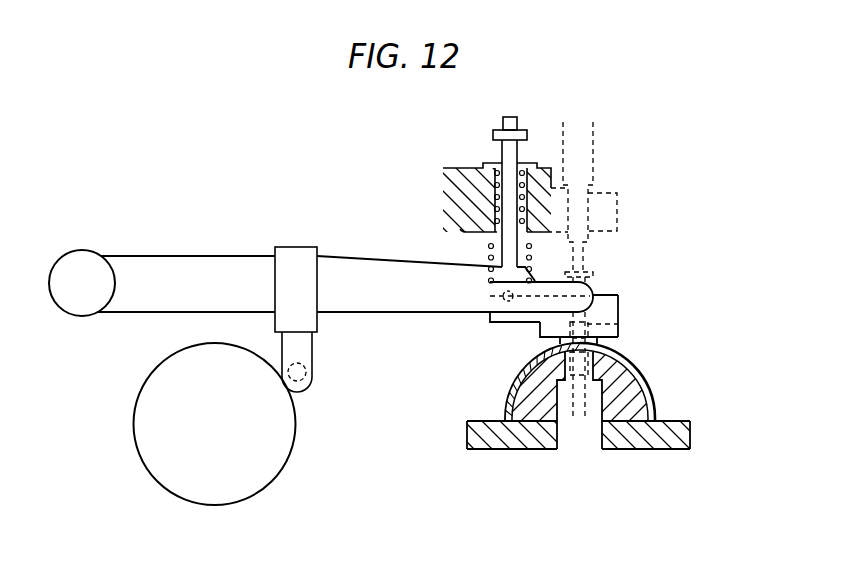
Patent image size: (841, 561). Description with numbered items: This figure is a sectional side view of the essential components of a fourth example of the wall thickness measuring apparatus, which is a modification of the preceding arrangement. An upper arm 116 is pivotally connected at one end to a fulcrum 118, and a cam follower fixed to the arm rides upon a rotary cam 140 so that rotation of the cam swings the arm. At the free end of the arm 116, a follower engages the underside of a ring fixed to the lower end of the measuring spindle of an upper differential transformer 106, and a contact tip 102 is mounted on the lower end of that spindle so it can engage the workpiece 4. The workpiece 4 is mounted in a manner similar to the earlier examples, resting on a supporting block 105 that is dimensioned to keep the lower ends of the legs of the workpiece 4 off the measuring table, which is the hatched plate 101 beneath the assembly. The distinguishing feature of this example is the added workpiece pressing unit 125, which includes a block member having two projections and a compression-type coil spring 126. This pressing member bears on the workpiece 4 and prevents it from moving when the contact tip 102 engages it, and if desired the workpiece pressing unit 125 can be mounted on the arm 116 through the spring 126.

The fulcrum 118 is at (72, 262).
The upper arm 116 is at (137, 262).
The rotary cam 140 is at (180, 485).
The compression-type coil spring 126 is at (495, 195).
The upper differential transformer 106 is at (580, 141).
The workpiece pressing unit 125 is at (607, 297).
The contact tip 102 is at (618, 325).
The workpiece 4 is at (638, 372).
The supporting block 105 is at (637, 410).
The base plate 101 is at (472, 432).